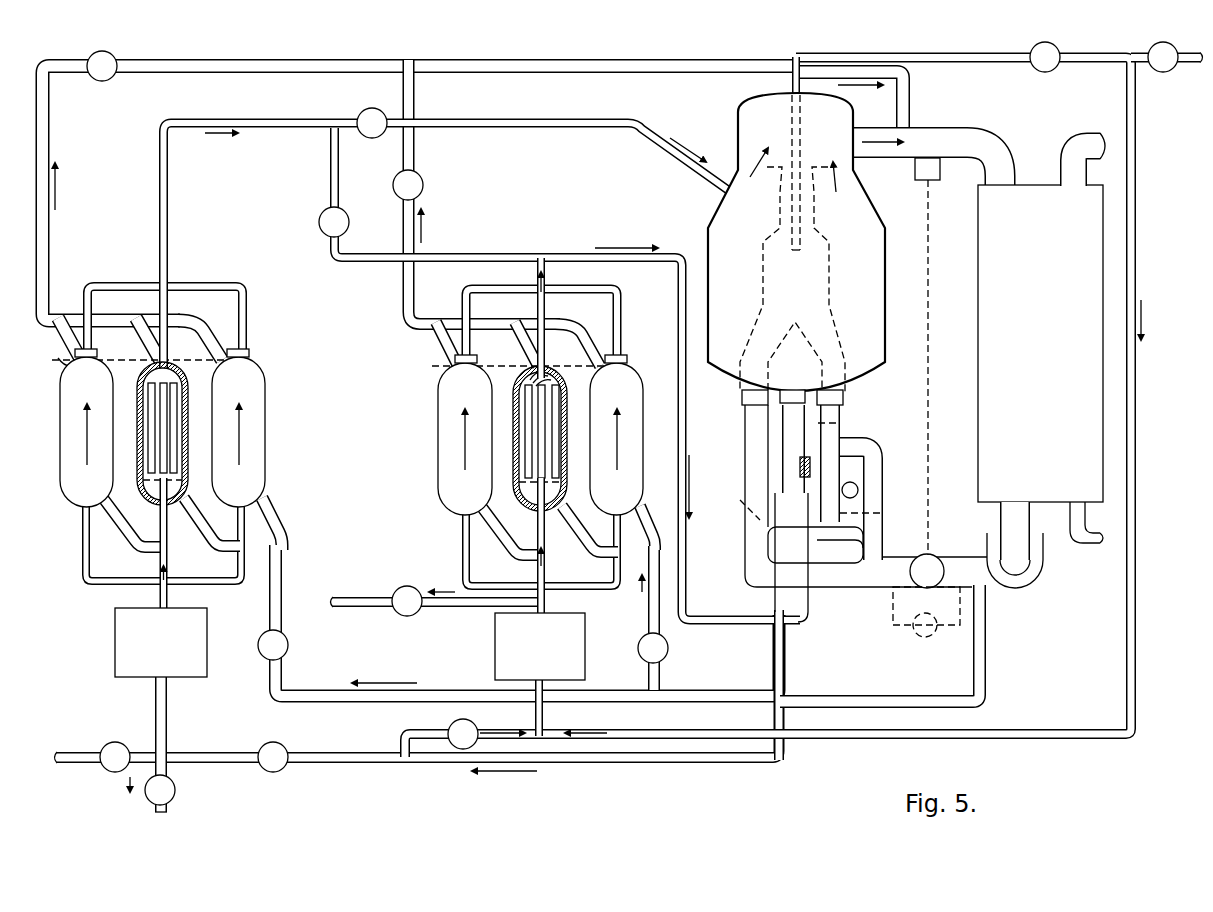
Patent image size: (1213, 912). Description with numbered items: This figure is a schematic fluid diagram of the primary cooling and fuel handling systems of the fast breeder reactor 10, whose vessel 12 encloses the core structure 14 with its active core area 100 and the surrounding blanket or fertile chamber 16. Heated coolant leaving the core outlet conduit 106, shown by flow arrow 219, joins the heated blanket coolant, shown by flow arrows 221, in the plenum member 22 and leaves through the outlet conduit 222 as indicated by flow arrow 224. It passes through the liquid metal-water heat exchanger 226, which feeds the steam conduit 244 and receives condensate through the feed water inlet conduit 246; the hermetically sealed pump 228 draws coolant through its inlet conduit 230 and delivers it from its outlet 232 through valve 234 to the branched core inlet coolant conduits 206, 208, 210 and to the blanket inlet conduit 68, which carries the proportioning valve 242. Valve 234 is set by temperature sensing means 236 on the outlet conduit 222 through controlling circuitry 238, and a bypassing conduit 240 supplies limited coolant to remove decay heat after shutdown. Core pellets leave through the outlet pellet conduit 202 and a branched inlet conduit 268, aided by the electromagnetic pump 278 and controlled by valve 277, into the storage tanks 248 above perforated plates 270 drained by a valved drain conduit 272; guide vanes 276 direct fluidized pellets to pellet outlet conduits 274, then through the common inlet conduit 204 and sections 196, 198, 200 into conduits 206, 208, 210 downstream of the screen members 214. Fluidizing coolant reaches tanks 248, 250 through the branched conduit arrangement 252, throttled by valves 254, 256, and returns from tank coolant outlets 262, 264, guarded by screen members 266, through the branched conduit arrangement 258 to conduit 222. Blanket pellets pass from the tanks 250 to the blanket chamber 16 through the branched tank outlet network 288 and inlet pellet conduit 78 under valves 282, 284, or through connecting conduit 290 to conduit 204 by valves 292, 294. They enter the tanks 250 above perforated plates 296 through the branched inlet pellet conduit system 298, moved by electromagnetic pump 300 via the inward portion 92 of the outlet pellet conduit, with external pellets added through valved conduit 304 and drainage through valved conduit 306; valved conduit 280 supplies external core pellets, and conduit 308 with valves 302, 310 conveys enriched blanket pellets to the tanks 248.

The fast breeder reactor 10 is at (902, 215).
The vessel 12 is at (705, 233).
The core structure 14 is at (825, 298).
The blanket or fertile chamber 16 is at (868, 241).
The coolant plenum member 22 is at (748, 108).
The blanket inlet coolant conduit 68 is at (798, 460).
The inlet pellet conduit 78 is at (664, 138).
The inward portion of outlet pellet conduit 92 is at (167, 715).
The active core area 100 is at (808, 259).
The core outlet conduit 106 is at (775, 214).
The inlet conduit section 196 is at (768, 542).
The inlet conduit section 198 is at (862, 470).
The inlet conduit section 200 is at (800, 545).
The core outlet pellet conduit 202 is at (762, 247).
The common inlet conduit 204 is at (812, 606).
The inlet coolant conduit 206 is at (746, 492).
The inlet coolant conduit 208 is at (780, 420).
The inlet coolant conduit 210 is at (845, 410).
The screen member 214 is at (830, 428).
The flow arrow 219 is at (805, 177).
The flow arrows 221 is at (760, 146).
The outlet conduit 222 is at (880, 125).
The flow arrow 224 is at (886, 150).
The liquid metal-water heat exchanger 226 is at (977, 400).
The liquid metal hermetically sealed pump 228 is at (1042, 576).
The pump inlet conduit 230 is at (1000, 519).
The pump outlet 232 is at (995, 590).
The valve 234 is at (930, 554).
The temperature sensing means 236 is at (942, 170).
The controlling circuitry 238 is at (930, 338).
The bypassing conduit 240 is at (905, 625).
The valve 242 is at (858, 491).
The steam conduit 244 is at (1068, 146).
The feed water inlet conduit 246 is at (1084, 544).
The storage tanks 248 is at (480, 400).
The storage tanks 250 is at (102, 395).
The branched conduit arrangement 252 is at (655, 700).
The throttling valve 254 is at (669, 649).
The throttling valve 256 is at (289, 646).
The branched conduit arrangement 258 is at (424, 80).
The storage tank coolant outlet 262 is at (440, 345).
The storage tank coolant outlet 264 is at (150, 335).
The screen members 266 is at (56, 364).
The branched storage tank inlet conduit 268 is at (472, 572).
The perforated plate 270 is at (562, 508).
The valved drain conduit 272 is at (354, 596).
The pellet outlet conduits 274 is at (545, 298).
The guide vanes 276 is at (546, 378).
The valve 277 is at (1035, 70).
The electromagnetic pump 278 is at (494, 650).
The valved conduit 280 is at (1163, 72).
The valve 282 is at (422, 183).
The valve 284 is at (104, 54).
The branched tank outlet network 288 is at (172, 292).
The connecting conduit 290 is at (592, 256).
The valve 292 is at (320, 218).
The valve 294 is at (360, 116).
The perforated plates 296 is at (180, 502).
The branched inlet pellet conduit system 298 is at (90, 572).
The electromagnetic pump 300 is at (113, 652).
The valve 302 is at (262, 748).
The valved conduit 304 is at (143, 750).
The valved conduit 306 is at (167, 776).
The conduit 308 is at (508, 732).
The valve 310 is at (450, 730).